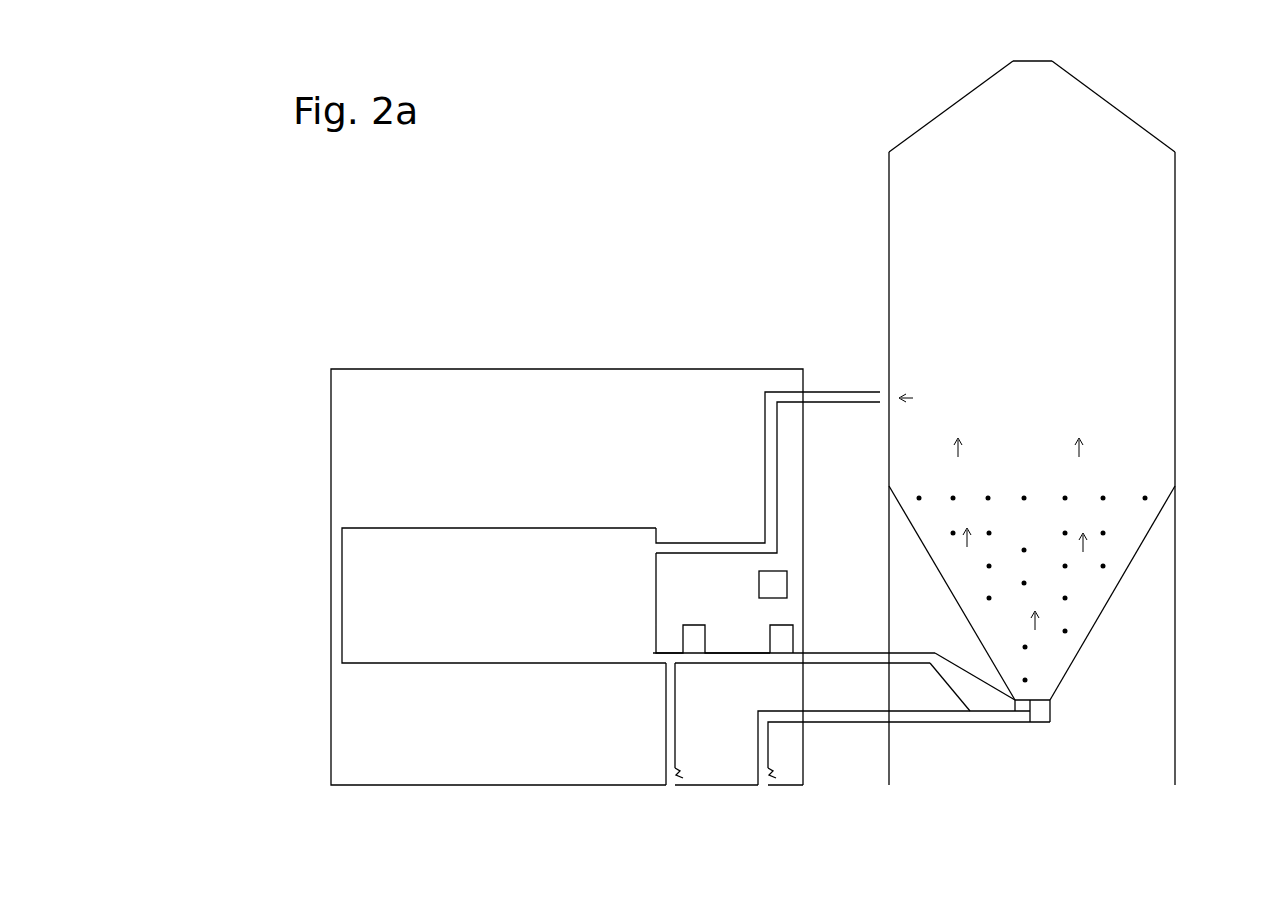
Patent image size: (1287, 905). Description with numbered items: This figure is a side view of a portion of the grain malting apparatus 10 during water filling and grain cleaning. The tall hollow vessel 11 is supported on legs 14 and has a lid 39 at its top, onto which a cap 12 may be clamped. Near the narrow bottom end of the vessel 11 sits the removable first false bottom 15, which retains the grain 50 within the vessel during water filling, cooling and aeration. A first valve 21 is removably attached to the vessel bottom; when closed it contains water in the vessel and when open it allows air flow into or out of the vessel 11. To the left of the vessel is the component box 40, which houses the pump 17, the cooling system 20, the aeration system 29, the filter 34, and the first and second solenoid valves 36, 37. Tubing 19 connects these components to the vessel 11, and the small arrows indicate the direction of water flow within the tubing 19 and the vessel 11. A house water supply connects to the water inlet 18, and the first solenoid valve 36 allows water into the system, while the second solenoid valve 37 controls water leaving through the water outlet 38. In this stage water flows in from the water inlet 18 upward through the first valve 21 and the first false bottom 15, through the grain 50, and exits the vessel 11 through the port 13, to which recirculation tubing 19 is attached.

The grain malting apparatus 10 is at (725, 253).
The hollow vessel 11 is at (1192, 269).
The cap 12 is at (1043, 43).
The port 13 is at (874, 372).
The legs 14 is at (903, 610).
The first false bottom 15 is at (1046, 685).
The pump 17 is at (687, 608).
The water inlet 18 is at (774, 790).
The tubing 19 is at (850, 418).
The cooling system 20 is at (504, 595).
The first valve 21 is at (1061, 732).
The aeration system 29 is at (801, 572).
The filter 34 is at (759, 625).
The first solenoid valve 36 is at (904, 748).
The second solenoid valve 37 is at (798, 724).
The water outlet 38 is at (678, 788).
The lid 39 is at (1140, 105).
The component box 40 is at (315, 493).
The grain 50 is at (1062, 485).